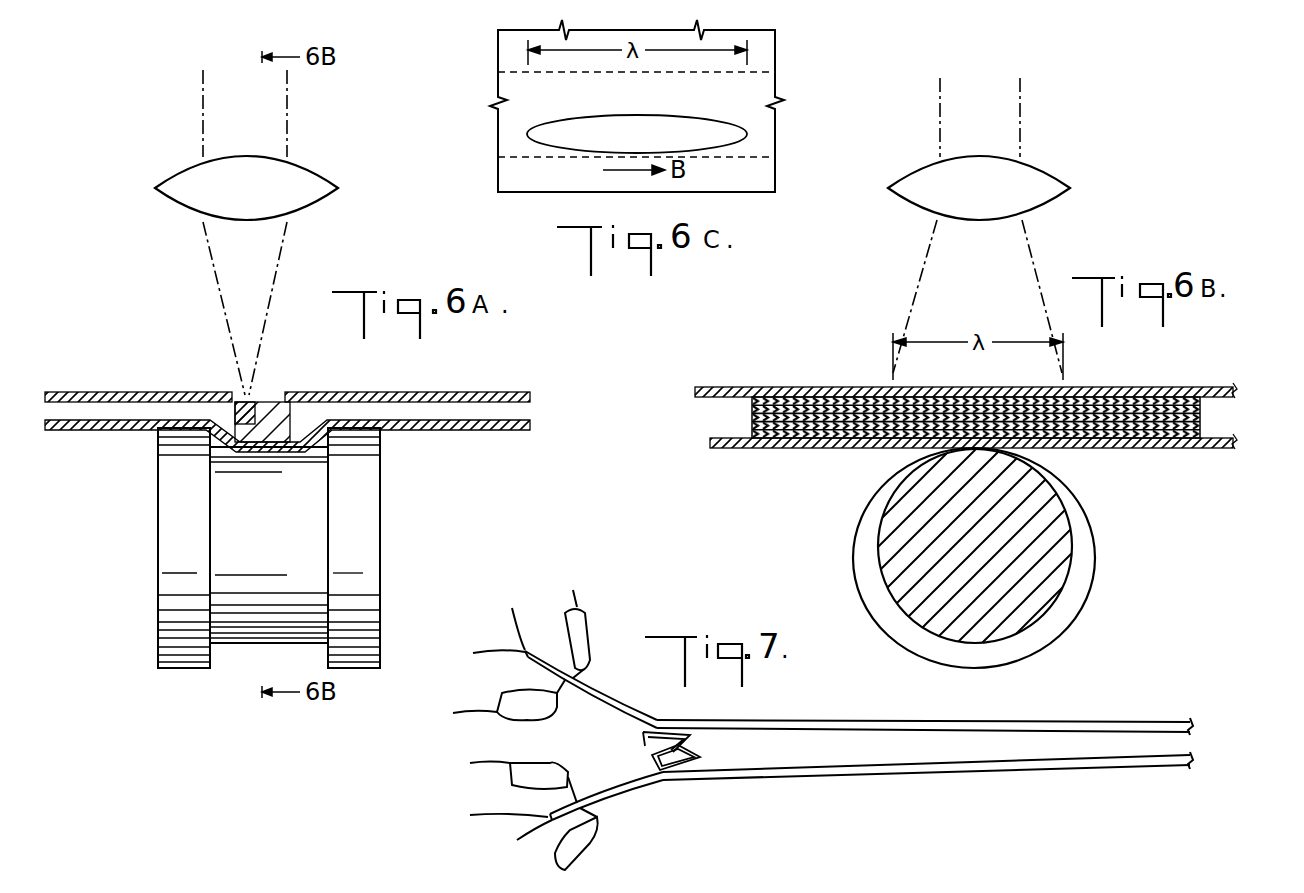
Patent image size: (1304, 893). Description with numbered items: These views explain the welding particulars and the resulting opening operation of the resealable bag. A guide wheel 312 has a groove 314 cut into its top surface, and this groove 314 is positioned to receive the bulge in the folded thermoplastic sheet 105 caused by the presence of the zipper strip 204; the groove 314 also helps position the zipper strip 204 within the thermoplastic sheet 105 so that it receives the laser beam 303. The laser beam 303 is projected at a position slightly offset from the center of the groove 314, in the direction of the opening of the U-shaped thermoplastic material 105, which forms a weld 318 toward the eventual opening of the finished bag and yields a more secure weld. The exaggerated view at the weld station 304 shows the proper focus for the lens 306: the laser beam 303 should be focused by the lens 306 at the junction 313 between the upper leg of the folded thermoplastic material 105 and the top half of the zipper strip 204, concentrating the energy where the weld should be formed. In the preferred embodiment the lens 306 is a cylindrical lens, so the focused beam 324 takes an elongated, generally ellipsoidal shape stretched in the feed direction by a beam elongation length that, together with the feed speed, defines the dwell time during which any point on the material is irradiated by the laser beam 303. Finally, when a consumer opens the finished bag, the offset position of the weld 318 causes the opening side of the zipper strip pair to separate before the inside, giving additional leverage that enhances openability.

In FIG. 6A, the thermoplastic sheet 105 is at (75, 392).
In FIG. 6C, the thermoplastic sheet 105 is at (735, 182).
In FIG. 6B, the thermoplastic sheet 105 is at (720, 387).
In FIG. 7, the thermoplastic sheet 105 is at (908, 762).
In FIG. 6A, the zipper strip 204 is at (297, 393).
In FIG. 6C, the zipper strip 204 is at (767, 142).
In FIG. 6B, the zipper strip 204 is at (752, 410).
In FIG. 7, the zipper strip 204 is at (700, 752).
In FIG. 6A, the laser beam 303 is at (203, 122).
In FIG. 6B, the laser beam 303 is at (1020, 102).
In FIG. 6A, the weld station 304 is at (262, 378).
In FIG. 6A, the lens 306 is at (323, 198).
In FIG. 6A, the guide wheel 312 is at (170, 538).
In FIG. 6B, the guide wheel 312 is at (856, 505).
In FIG. 6B, the junction 313 is at (1200, 403).
In FIG. 6A, the groove 314 is at (242, 643).
In FIG. 6B, the groove 314 is at (878, 573).
In FIG. 6A, the weld 318 is at (243, 400).
In FIG. 7, the weld 318 is at (660, 720).
In FIG. 6C, the focused beam 324 is at (585, 153).